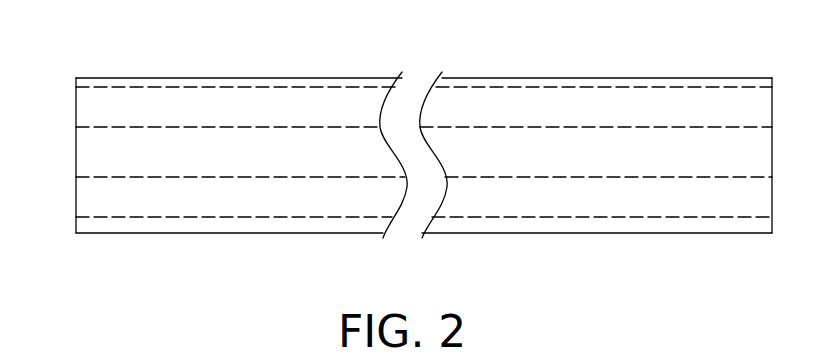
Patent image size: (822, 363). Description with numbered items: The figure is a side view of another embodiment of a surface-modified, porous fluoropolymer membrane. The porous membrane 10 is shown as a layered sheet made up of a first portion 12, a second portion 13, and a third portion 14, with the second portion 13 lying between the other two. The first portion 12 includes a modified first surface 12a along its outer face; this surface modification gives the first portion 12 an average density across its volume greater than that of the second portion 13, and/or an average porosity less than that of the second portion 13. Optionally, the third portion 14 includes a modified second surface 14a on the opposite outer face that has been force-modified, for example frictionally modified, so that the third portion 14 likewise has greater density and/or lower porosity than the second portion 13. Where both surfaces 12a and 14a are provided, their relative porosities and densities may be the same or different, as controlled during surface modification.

The porous membrane 10 is at (555, 64).
The first portion 12 is at (73, 78).
The modified first surface 12a is at (155, 87).
The second portion 13 is at (73, 127).
The third portion 14 is at (73, 177).
The modified second surface 14a is at (143, 228).